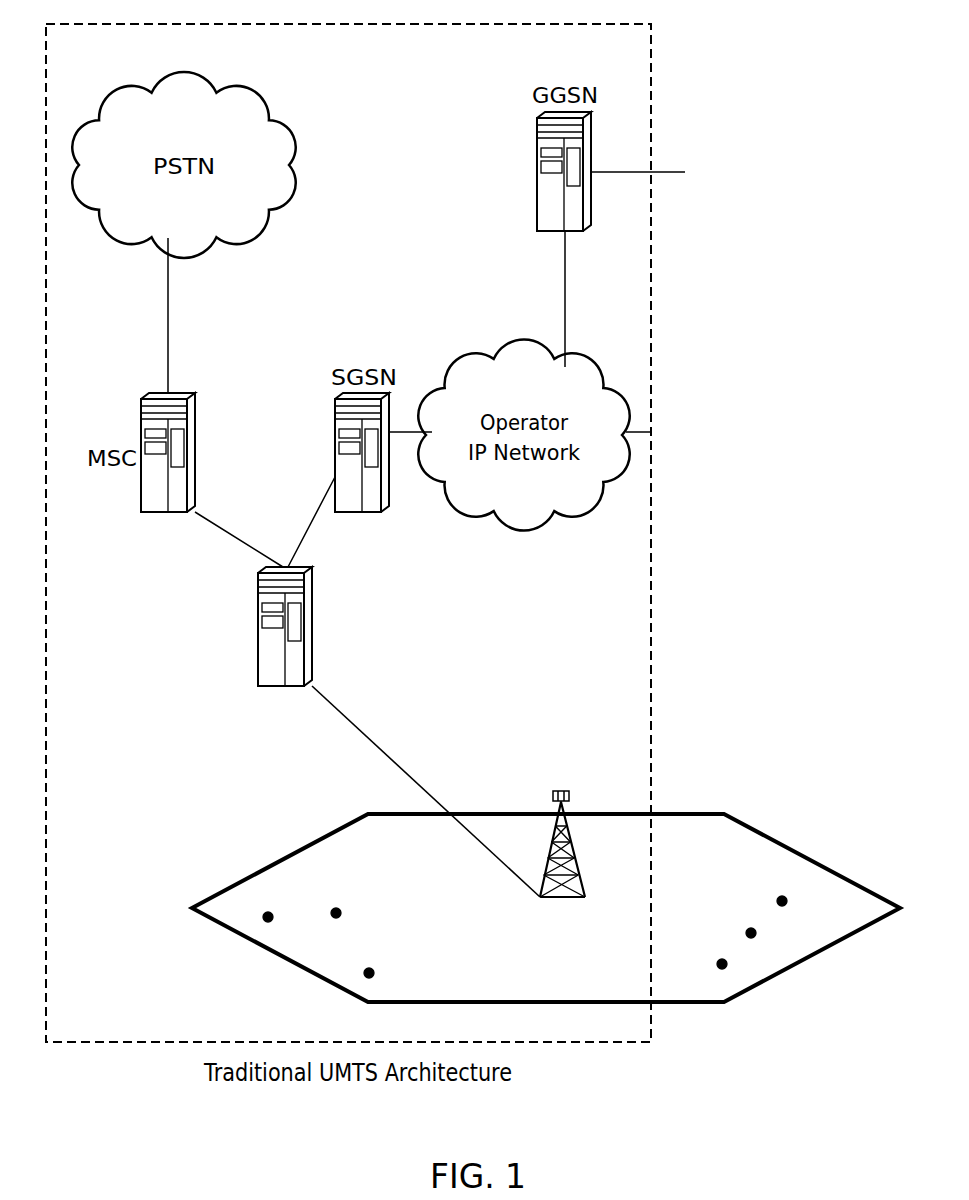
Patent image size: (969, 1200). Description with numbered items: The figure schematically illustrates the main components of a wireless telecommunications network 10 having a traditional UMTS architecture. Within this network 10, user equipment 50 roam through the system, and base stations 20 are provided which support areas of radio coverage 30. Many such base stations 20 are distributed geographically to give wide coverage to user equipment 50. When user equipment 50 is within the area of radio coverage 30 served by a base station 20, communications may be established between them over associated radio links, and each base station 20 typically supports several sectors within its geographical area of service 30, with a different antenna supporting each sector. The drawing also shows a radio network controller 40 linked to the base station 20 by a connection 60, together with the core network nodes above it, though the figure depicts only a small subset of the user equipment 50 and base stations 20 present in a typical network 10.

The wireless telecommunications network 10 is at (730, 78).
The base station 20 is at (552, 830).
The area of radio coverage 30 is at (843, 877).
The radio network controller (RNC) 40 is at (258, 645).
The user equipment 50 is at (369, 973).
The Iub interface link 60 is at (342, 716).